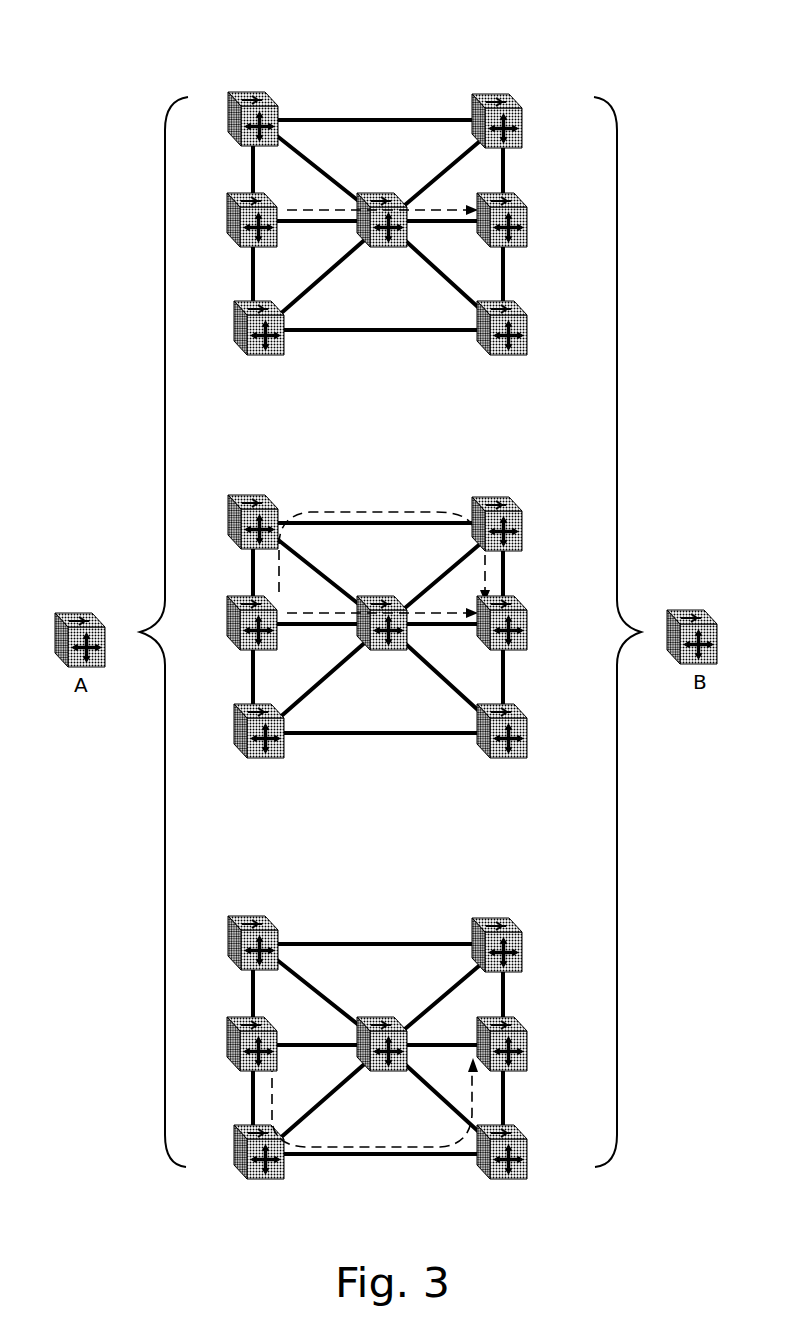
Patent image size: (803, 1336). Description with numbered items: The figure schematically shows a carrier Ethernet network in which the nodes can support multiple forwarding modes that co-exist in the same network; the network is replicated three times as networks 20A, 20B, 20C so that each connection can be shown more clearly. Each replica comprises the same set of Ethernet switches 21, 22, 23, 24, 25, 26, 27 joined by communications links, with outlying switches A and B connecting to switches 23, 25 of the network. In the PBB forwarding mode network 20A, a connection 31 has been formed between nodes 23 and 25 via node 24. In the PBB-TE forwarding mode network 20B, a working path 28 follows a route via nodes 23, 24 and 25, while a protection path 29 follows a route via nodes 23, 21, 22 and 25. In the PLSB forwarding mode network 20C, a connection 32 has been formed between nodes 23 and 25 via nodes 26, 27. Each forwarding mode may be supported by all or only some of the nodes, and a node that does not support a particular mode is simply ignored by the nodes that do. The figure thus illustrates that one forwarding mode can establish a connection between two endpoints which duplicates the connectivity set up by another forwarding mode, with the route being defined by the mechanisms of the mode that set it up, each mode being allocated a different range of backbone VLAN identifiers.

The network in PBB forwarding mode 20A is at (538, 51).
The network in PBB-TE forwarding mode 20B is at (564, 457).
The network in PLSB forwarding mode 20C is at (553, 897).
The Ethernet switch 21 is at (240, 93).
The Ethernet switch 22 is at (478, 96).
The Ethernet switch 23 is at (232, 194).
The Ethernet switch 24 is at (364, 195).
The Ethernet switch 25 is at (512, 196).
The Ethernet switch 26 is at (245, 1130).
The Ethernet switch 27 is at (497, 1135).
The working path 28 is at (320, 615).
The protection path 29 is at (345, 511).
The PBB connection 31 is at (320, 213).
The PLSB connection 32 is at (410, 1150).